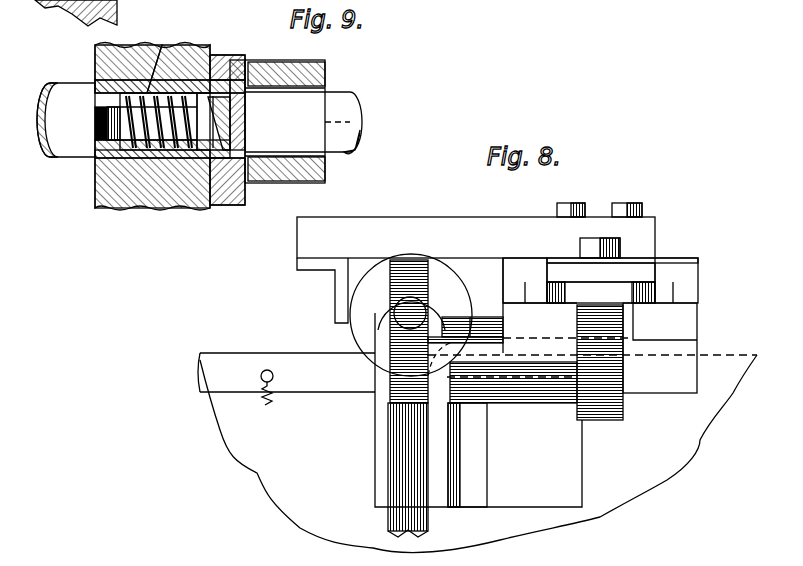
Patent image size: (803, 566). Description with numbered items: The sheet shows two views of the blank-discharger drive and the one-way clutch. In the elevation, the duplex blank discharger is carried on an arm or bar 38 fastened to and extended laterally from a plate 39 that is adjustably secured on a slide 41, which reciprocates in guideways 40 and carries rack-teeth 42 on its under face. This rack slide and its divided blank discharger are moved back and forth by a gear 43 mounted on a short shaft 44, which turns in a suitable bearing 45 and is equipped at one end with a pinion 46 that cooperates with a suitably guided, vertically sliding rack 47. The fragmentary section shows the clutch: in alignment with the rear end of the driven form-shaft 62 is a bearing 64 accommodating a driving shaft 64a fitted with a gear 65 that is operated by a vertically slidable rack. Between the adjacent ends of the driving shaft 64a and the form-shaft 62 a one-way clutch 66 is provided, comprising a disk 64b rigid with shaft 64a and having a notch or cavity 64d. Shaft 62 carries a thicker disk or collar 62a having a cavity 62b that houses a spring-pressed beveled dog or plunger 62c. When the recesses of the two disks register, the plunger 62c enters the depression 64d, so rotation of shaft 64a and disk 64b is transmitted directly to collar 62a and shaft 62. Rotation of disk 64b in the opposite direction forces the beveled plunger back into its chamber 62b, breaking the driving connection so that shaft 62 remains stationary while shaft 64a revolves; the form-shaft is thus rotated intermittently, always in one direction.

In FIG. 8, the arm or bar 38 is at (476, 263).
In FIG. 8, the plate 39 is at (620, 248).
In FIG. 8, the guideways 40 is at (547, 282).
In FIG. 8, the slide 41 is at (623, 290).
In FIG. 8, the rack-teeth 42 is at (698, 311).
In FIG. 8, the gear 43 is at (577, 422).
In FIG. 8, the short shaft 44 is at (477, 382).
In FIG. 8, the bearing 45 is at (485, 317).
In FIG. 8, the pinion 46 is at (390, 383).
In FIG. 8, the vertically-sliding rack 47 is at (388, 270).
In FIG. 9, the form-shaft 62 is at (66, 97).
In FIG. 9, the collar 62a is at (132, 207).
In FIG. 9, the cavity 62b is at (148, 83).
In FIG. 9, the beveled dog or plunger 62c is at (198, 80).
In FIG. 8, the bearing 64 is at (388, 313).
In FIG. 9, the driving shaft 64a is at (346, 98).
In FIG. 9, the disk 64b is at (233, 206).
In FIG. 8, the disk 64b is at (357, 330).
In FIG. 9, the notch or cavity 64d is at (245, 83).
In FIG. 9, the gear 65 is at (326, 65).
In FIG. 9, the one-way clutch 66 is at (178, 210).